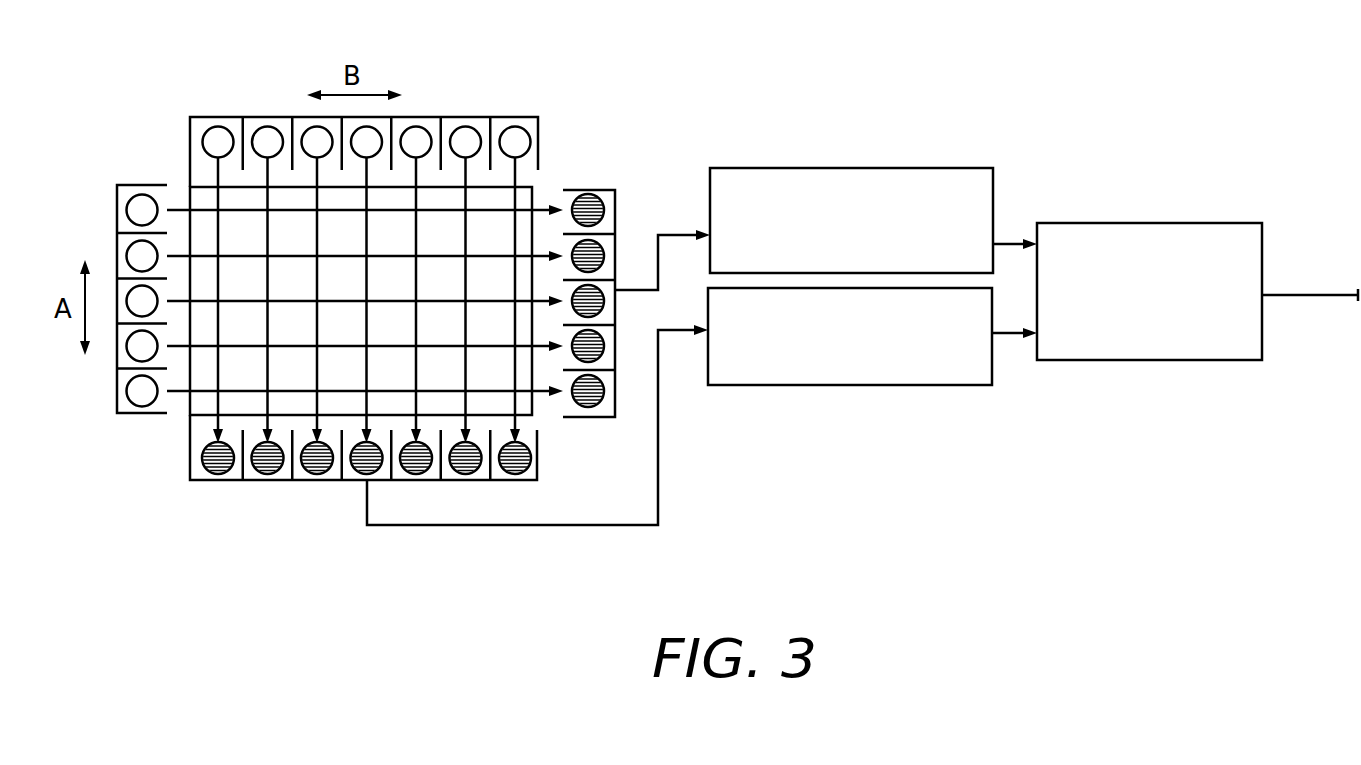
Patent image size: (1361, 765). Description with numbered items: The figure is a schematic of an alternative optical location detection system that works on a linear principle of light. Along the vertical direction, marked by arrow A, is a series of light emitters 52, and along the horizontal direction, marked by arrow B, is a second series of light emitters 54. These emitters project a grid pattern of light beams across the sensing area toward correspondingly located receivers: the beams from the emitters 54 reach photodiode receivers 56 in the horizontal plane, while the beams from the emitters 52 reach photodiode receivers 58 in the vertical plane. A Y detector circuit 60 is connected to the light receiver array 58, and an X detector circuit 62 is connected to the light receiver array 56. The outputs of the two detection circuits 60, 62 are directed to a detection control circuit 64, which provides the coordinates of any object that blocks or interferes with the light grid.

The light emitters 52 is at (117, 205).
The light emitters 54 is at (466, 118).
The photodiode receivers 56 is at (322, 474).
The photodiode receivers 58 is at (586, 190).
The Y detector circuit 60 is at (852, 168).
The X detector circuit 62 is at (838, 386).
The detection control circuit 64 is at (1147, 223).